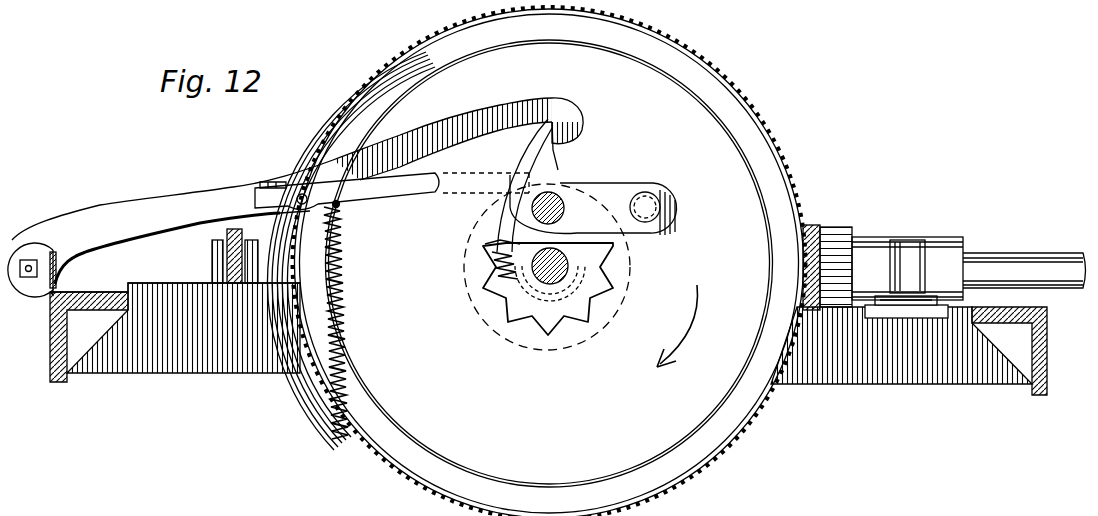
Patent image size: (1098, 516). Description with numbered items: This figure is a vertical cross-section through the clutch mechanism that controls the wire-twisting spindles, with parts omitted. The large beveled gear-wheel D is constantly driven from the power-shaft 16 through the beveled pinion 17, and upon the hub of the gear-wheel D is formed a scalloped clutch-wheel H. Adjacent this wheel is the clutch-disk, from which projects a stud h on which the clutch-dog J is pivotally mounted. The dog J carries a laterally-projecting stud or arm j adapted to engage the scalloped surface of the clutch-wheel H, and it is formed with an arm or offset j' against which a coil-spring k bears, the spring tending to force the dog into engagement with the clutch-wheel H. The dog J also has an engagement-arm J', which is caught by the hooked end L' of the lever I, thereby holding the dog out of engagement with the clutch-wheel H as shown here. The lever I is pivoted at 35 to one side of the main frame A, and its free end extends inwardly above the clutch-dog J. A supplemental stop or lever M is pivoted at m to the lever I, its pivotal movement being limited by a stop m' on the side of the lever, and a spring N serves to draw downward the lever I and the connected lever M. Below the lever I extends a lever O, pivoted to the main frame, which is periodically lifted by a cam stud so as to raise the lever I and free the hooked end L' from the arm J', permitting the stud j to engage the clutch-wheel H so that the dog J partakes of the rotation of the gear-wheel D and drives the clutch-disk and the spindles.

The beveled gear-wheel D is at (622, 407).
The frame A is at (63, 384).
The pivot of lever L 35 is at (28, 258).
The lever I is at (446, 122).
The hooked end of lever L L' is at (583, 117).
The engagement-arm J' is at (552, 185).
The clutch-dog J is at (593, 192).
The laterally-projecting stud or arm j is at (659, 202).
The stud h is at (563, 201).
The scalloped clutch-wheel H is at (547, 267).
The coil-spring k is at (493, 260).
The arm or offset j' is at (468, 276).
The supplemental stop or lever M is at (399, 210).
The pivot of lever M m is at (301, 168).
The stop m' is at (269, 160).
The lever O is at (214, 253).
The spring N is at (330, 434).
The beveled pinion 17 is at (806, 224).
The power-shaft 16 is at (981, 258).